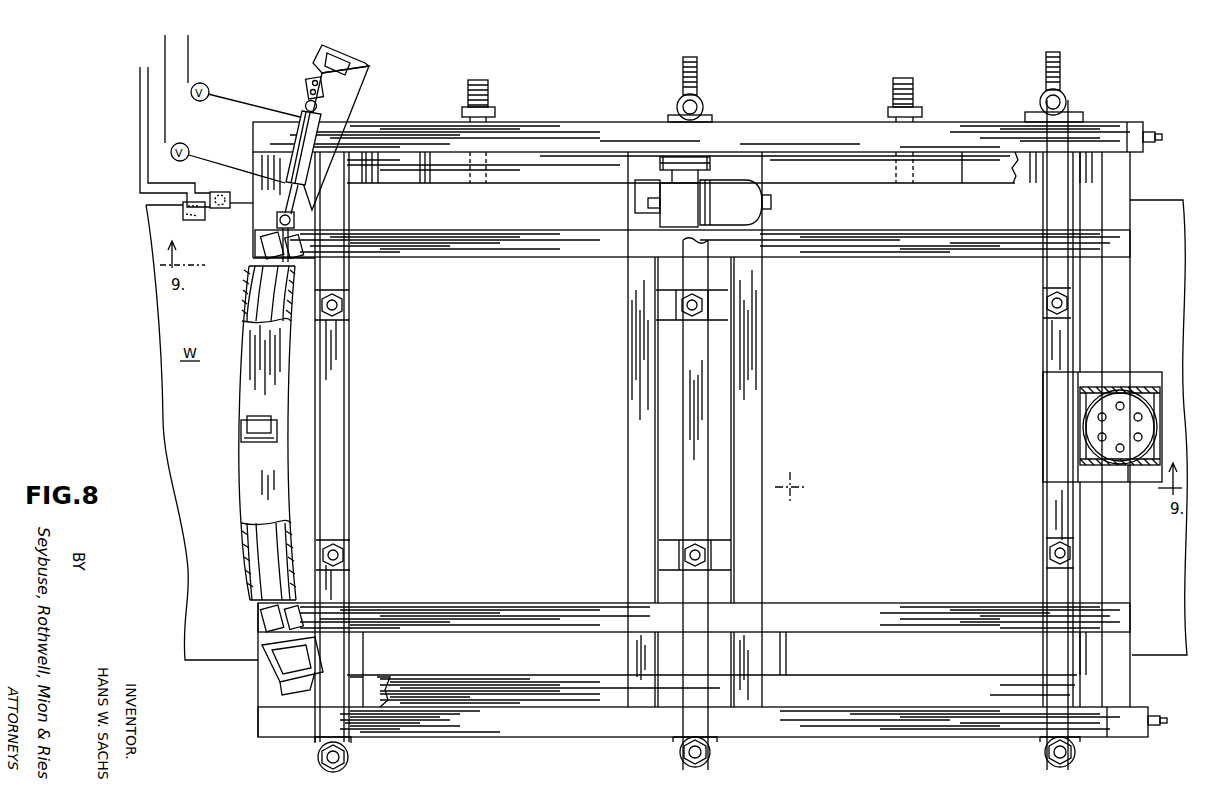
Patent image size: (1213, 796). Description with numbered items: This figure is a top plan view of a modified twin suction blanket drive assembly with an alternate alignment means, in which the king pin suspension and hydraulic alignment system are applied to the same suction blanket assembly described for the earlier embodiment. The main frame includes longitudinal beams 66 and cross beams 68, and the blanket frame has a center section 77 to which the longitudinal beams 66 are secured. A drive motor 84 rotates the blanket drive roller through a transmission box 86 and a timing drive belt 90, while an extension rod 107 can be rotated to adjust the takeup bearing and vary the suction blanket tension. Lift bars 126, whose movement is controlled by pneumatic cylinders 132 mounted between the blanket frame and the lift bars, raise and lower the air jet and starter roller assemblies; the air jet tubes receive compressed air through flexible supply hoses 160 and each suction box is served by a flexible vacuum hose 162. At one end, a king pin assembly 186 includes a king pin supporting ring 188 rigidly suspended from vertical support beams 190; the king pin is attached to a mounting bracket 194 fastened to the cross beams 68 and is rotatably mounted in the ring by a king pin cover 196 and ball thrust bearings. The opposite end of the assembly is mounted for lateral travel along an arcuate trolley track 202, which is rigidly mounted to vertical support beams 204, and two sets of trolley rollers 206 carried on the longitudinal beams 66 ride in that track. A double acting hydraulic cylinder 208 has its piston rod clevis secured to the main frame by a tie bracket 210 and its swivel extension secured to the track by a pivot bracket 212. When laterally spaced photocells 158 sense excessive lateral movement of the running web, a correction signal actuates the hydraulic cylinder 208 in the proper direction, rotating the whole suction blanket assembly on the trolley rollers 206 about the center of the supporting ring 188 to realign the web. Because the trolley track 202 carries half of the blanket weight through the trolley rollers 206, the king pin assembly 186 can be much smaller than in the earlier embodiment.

The longitudinal beams 66 is at (412, 258).
The cross beams 68 is at (253, 190).
The center section 77 is at (628, 462).
The drive motor 84 is at (768, 183).
The transmission box 86 is at (668, 213).
The timing drive belt 90 is at (690, 155).
The extension rod 107 is at (1160, 132).
The lift bars 126 is at (349, 420).
The pneumatic cylinders 132 is at (712, 312).
The photocells 158 is at (201, 220).
The flexible supply hoses 160 is at (697, 94).
The flexible vacuum hose 162 is at (486, 102).
The king pin assembly 186 is at (1072, 431).
The king pin supporting ring 188 is at (1138, 395).
The vertical support beams 190 is at (1105, 470).
The mounting bracket 194 is at (1043, 466).
The king pin cover 196 is at (1128, 466).
The arcuate trolley track 202 is at (243, 516).
The vertical support beams 204 is at (358, 63).
The trolley rollers 206 is at (298, 246).
The double acting hydraulic cylinder 208 is at (301, 144).
The tie bracket 210 is at (275, 234).
The pivot bracket 212 is at (310, 88).